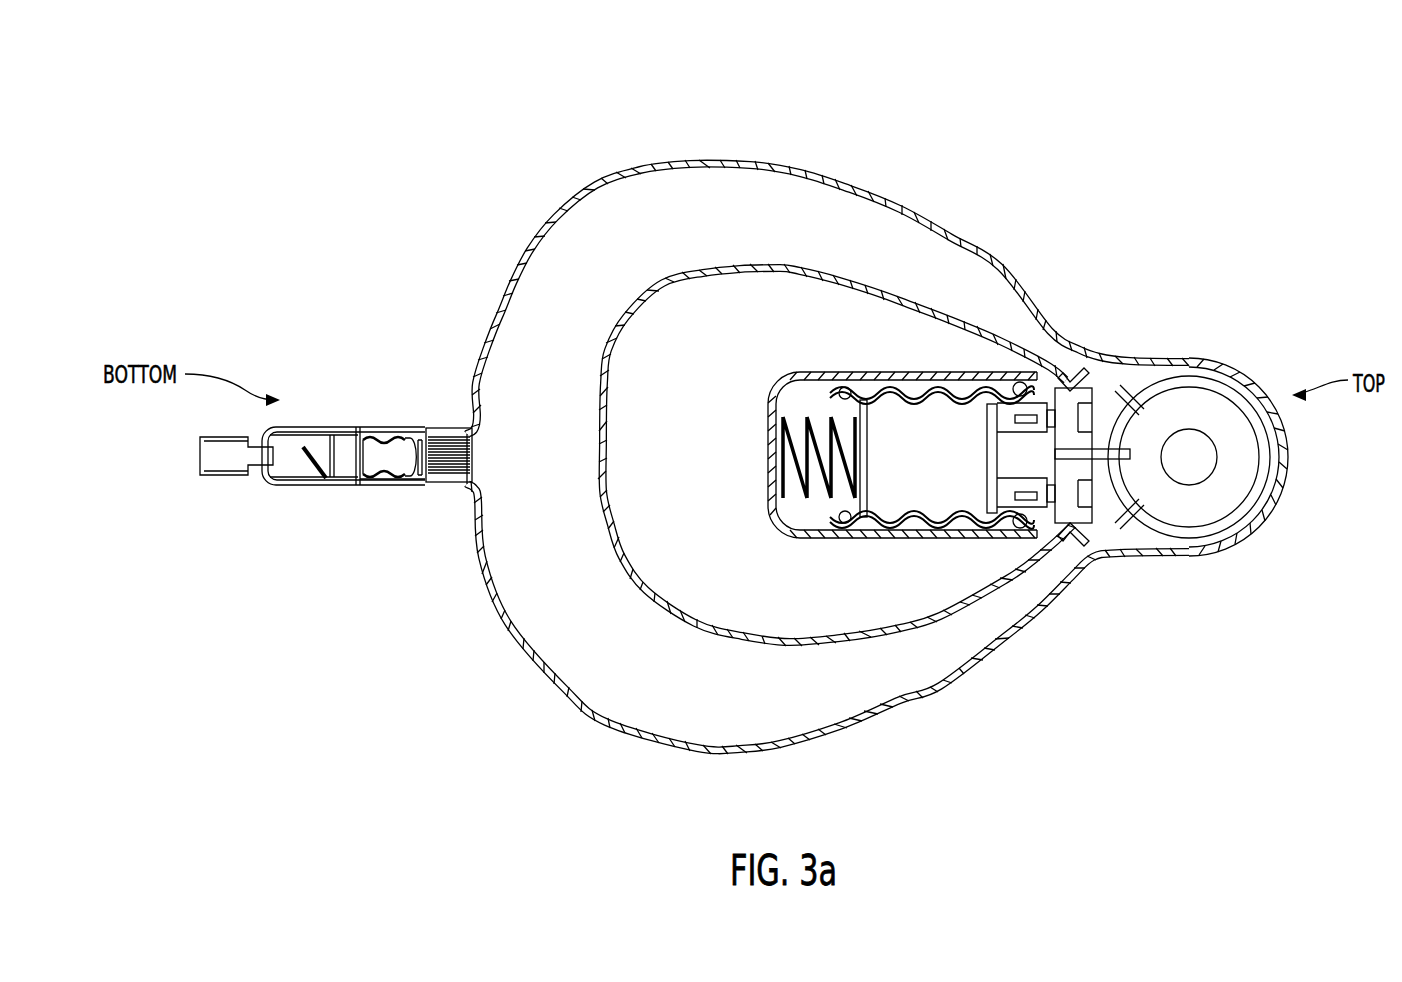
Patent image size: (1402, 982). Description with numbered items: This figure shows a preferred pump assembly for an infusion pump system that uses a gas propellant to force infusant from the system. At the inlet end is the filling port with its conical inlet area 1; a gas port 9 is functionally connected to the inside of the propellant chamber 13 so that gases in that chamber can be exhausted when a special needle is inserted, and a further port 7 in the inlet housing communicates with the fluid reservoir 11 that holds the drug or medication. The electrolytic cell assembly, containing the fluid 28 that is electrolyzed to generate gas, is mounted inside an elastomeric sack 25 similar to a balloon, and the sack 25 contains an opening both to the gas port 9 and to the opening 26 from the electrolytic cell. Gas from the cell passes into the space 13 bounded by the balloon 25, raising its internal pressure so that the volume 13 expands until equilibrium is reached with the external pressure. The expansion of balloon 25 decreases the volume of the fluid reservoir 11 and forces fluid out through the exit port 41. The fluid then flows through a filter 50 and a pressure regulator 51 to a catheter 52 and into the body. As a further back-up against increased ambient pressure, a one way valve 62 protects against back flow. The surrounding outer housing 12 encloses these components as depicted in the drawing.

The conical inlet area 1 is at (1232, 457).
The port 7 is at (1153, 420).
The gas port 9 is at (1137, 458).
The fluid reservoir 11 is at (803, 712).
The outer housing shell 12 is at (485, 635).
The propellant chamber 13 is at (660, 540).
The elastomeric sack 25 is at (716, 268).
The outlet port 26 is at (1070, 382).
The fluid 28 is at (917, 477).
The exit port 41 is at (478, 459).
The filter 50 is at (453, 448).
The pressure regulator 51 is at (383, 428).
The catheter 52 is at (226, 478).
The one way valve 62 is at (316, 465).